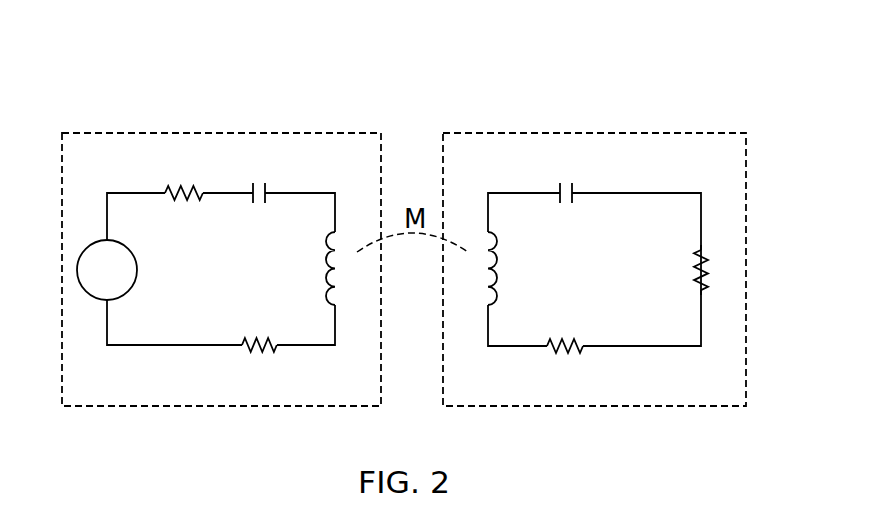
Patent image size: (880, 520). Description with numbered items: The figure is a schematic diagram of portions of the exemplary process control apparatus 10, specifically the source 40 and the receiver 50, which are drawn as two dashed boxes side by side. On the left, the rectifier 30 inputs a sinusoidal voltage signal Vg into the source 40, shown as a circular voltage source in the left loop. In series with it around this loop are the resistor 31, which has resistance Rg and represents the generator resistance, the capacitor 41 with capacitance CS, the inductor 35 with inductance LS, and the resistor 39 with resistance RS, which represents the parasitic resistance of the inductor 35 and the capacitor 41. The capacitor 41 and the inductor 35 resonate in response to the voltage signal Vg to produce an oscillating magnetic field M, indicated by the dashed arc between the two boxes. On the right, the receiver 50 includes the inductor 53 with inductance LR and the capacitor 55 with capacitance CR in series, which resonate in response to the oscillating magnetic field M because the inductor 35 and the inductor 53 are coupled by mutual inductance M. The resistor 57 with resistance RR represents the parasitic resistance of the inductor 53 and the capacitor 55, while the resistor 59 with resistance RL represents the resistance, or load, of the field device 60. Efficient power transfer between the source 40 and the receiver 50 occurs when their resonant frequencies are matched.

The process control apparatus 10 is at (666, 56).
The rectifier 30 is at (77, 272).
The resistor 31 is at (180, 203).
The inductor 35 is at (326, 263).
The resistor 39 is at (254, 338).
The source 40 is at (115, 133).
The capacitor 41 is at (258, 203).
The receiver 50 is at (488, 133).
The inductor 53 is at (497, 278).
The capacitor 55 is at (563, 203).
The resistor 57 is at (568, 339).
The resistor 59 is at (692, 272).
The field device 60 is at (703, 250).